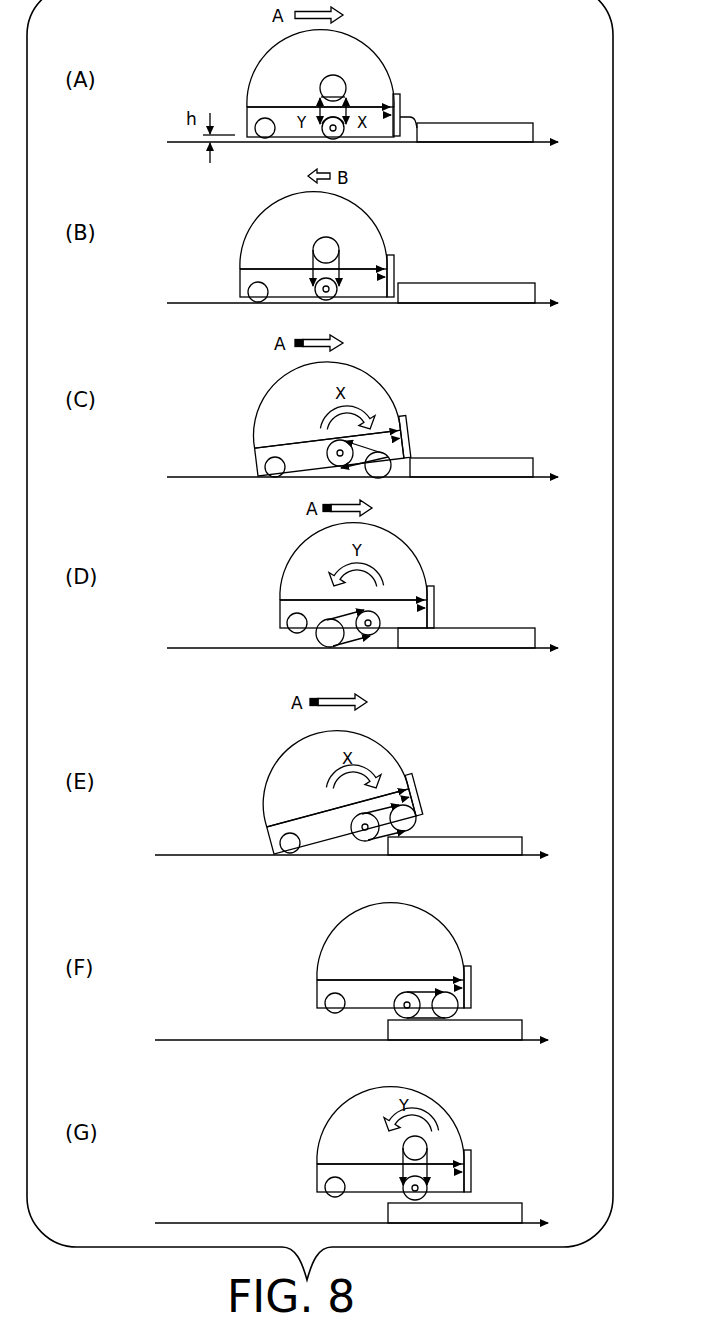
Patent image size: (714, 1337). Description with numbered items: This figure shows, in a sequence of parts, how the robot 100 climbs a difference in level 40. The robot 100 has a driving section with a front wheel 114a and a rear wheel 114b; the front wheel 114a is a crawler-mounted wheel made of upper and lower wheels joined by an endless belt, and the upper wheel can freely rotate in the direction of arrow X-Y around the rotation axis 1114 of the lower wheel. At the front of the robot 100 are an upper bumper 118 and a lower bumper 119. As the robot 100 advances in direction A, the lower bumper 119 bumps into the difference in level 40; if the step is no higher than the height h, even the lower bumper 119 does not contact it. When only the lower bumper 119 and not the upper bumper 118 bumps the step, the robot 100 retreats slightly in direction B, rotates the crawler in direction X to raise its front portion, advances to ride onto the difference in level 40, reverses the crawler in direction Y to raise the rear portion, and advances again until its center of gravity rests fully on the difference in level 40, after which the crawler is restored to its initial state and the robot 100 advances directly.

The robot 100 is at (218, 40).
The upper bumper 118 is at (398, 97).
The lower bumper 119 is at (402, 126).
The difference in level 40 is at (523, 123).
The rotation axis 1114 is at (323, 134).
The front wheel 114a is at (348, 140).
The rear wheel 114b is at (258, 140).